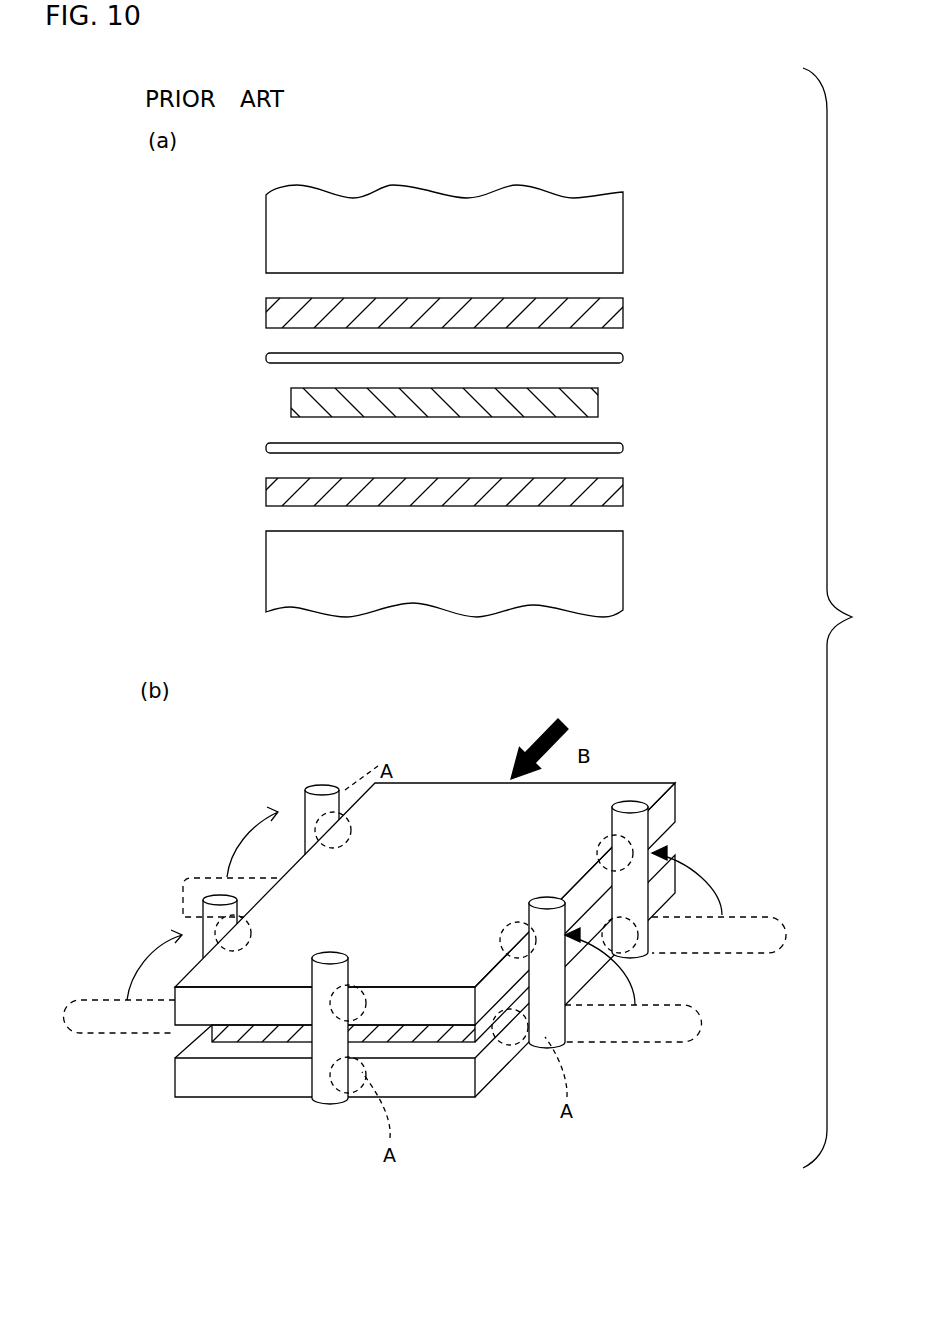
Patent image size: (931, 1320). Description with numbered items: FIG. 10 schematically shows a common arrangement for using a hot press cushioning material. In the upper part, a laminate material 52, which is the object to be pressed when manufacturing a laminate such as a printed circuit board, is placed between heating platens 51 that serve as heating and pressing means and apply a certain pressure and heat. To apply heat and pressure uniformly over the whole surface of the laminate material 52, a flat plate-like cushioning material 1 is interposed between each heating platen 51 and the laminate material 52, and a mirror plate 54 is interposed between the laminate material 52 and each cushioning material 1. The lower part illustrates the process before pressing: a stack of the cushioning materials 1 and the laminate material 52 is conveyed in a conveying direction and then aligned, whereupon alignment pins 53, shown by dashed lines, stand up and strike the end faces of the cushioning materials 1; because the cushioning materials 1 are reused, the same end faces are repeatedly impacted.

The cushioning material 1 is at (618, 314).
The heating platen 51 is at (612, 238).
The laminate material 52 is at (585, 400).
The alignment pin 53 is at (317, 788).
The mirror plate 54 is at (624, 358).